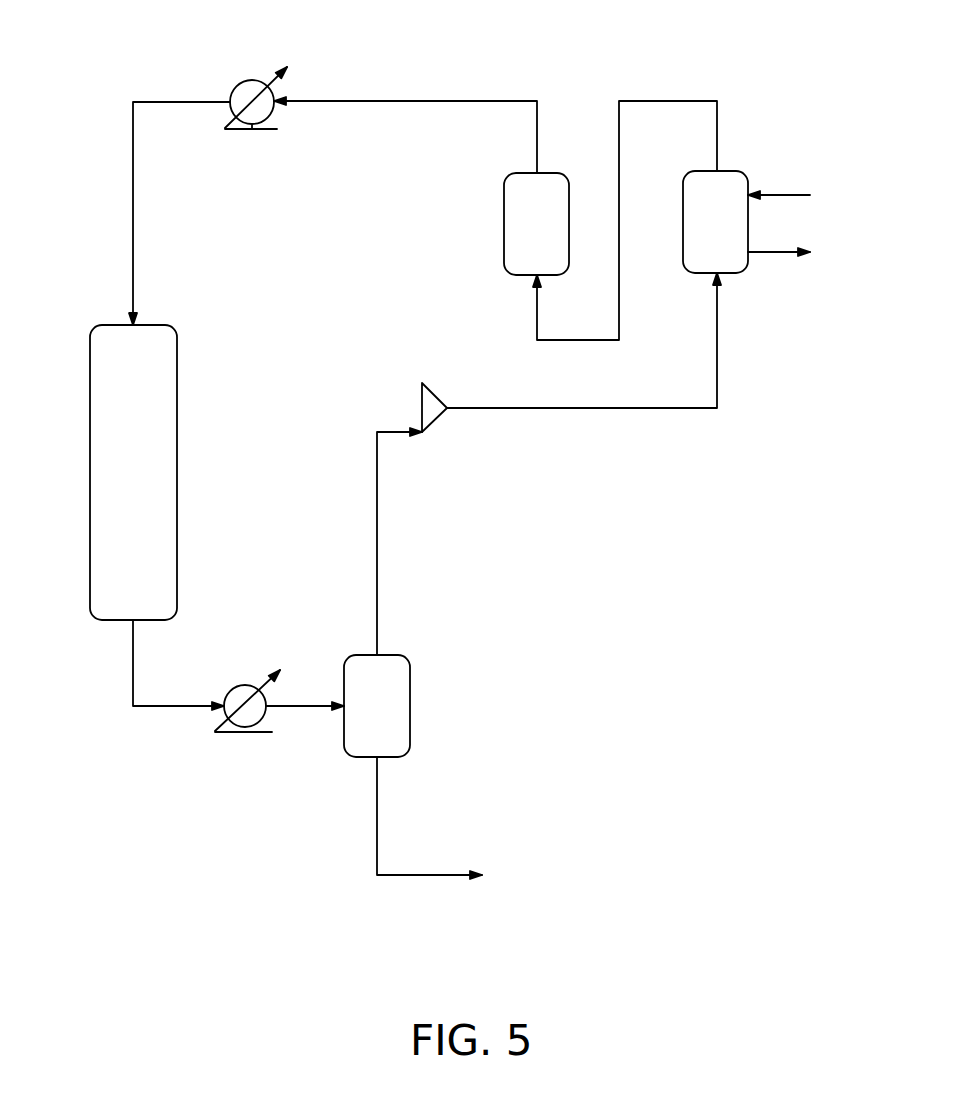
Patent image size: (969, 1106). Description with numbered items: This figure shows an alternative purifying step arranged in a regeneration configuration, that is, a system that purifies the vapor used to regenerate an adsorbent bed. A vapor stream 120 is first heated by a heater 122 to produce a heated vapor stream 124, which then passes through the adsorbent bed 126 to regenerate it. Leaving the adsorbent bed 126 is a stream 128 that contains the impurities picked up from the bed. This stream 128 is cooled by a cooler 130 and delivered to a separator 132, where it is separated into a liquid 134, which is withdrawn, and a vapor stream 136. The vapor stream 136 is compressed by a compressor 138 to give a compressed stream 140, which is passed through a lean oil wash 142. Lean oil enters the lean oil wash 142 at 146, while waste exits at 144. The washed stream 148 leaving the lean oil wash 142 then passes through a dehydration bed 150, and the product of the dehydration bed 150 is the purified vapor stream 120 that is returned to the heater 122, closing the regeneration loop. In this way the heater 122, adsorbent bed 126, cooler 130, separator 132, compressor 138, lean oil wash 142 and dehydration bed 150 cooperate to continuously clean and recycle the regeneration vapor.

The vapor stream 120 is at (423, 101).
The heater 122 is at (252, 129).
The heated vapor stream 124 is at (133, 213).
The adsorbent bed 126 is at (156, 492).
The stream containing impurities 128 is at (133, 663).
The cooler 130 is at (245, 685).
The separator 132 is at (400, 717).
The liquid 134 is at (425, 875).
The vapor stream 136 is at (378, 543).
The compressor 138 is at (437, 383).
The compressed stream 140 is at (518, 408).
The lean oil wash 142 is at (739, 233).
The waste 144 is at (777, 253).
The lean oil 146 is at (778, 194).
The stream 148 is at (670, 101).
The dehydration bed 150 is at (560, 237).